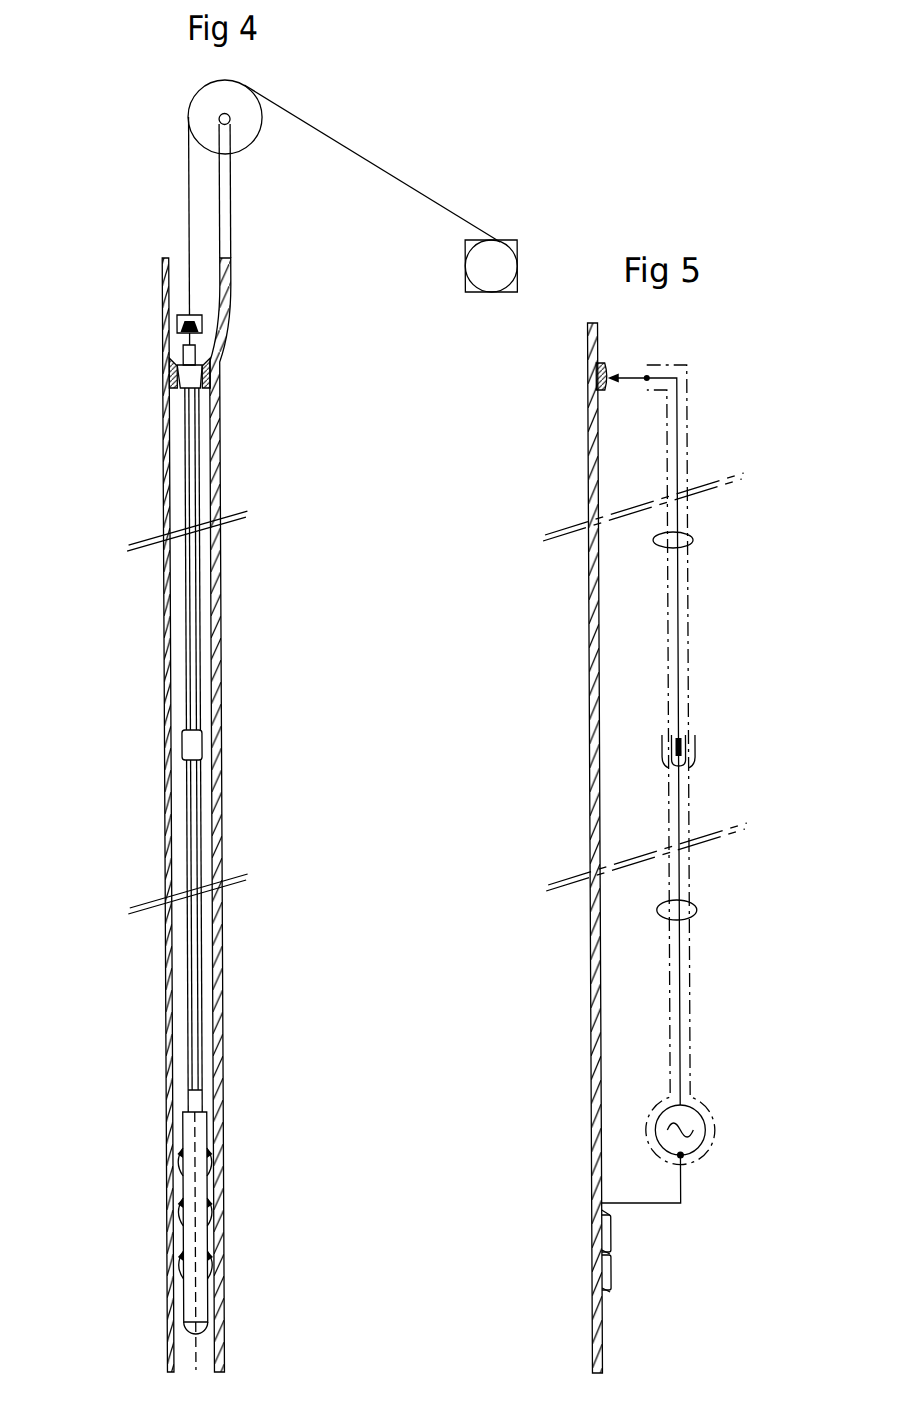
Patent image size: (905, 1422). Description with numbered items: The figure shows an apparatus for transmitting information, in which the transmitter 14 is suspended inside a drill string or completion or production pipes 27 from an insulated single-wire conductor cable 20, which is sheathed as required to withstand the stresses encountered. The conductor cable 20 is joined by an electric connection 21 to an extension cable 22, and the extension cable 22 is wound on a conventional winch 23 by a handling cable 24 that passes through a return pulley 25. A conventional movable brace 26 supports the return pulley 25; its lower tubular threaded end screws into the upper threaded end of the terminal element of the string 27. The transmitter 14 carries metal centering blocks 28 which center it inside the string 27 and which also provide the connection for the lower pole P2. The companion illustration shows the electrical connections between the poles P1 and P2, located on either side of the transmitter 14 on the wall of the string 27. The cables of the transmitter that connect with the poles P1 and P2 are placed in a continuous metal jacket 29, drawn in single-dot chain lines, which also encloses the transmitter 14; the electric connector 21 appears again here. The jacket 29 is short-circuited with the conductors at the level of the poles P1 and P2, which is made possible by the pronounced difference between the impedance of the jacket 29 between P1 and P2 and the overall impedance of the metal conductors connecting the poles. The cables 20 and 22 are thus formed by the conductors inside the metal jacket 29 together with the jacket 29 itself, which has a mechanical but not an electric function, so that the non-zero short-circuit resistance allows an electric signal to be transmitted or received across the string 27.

In FIG. 4, the transmitter 14 is at (191, 1305).
In FIG. 4, the insulated single-wire conductor cable 20 is at (190, 968).
In FIG. 5, the insulated single-wire conductor cable 20 is at (696, 912).
In FIG. 4, the electric connection 21 is at (185, 745).
In FIG. 5, the electric connection 21 is at (694, 752).
In FIG. 4, the extension cable 22 is at (187, 600).
In FIG. 5, the extension cable 22 is at (696, 537).
In FIG. 4, the winch 23 is at (493, 278).
In FIG. 4, the handling cable 24 is at (188, 213).
In FIG. 4, the return pulley 25 is at (204, 107).
In FIG. 4, the movable brace 26 is at (163, 278).
In FIG. 4, the drill string or completion or production pipes 27 is at (168, 1190).
In FIG. 5, the drill string or completion or production pipes 27 is at (594, 1350).
In FIG. 4, the metal centering blocks 28 is at (208, 1163).
In FIG. 5, the metal centering blocks 28 is at (600, 1213).
In FIG. 5, the continuous metal jacket 29 is at (687, 437).
In FIG. 5, the upper pole P1 is at (616, 365).
In FIG. 5, the lower pole P2 is at (632, 1252).